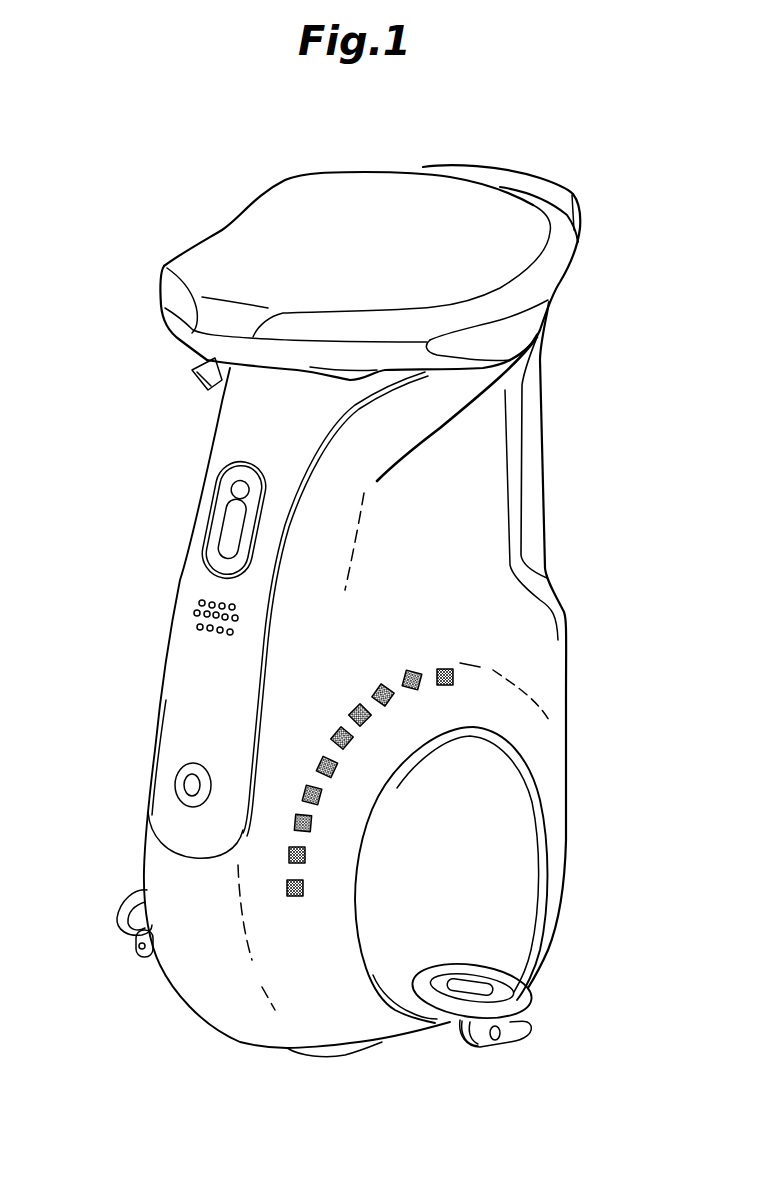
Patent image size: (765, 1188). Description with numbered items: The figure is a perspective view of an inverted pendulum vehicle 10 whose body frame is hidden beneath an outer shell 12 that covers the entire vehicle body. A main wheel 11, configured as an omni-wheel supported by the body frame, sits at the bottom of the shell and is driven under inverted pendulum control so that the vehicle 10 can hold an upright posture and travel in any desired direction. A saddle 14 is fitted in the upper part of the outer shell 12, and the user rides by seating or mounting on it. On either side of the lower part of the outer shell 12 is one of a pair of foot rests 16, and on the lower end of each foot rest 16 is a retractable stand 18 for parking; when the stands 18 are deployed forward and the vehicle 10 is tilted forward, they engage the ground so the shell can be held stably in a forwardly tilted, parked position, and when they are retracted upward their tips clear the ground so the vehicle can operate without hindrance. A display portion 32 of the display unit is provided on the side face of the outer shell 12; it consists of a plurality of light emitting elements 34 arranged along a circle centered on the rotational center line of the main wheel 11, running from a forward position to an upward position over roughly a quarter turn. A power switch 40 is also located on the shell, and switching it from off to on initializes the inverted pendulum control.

The inverted pendulum vehicle 10 is at (166, 478).
The main wheel 11 is at (343, 1057).
The outer shell 12 is at (537, 650).
The saddle 14 is at (375, 185).
The foot rest 16 is at (136, 895).
The retractable stand 18 is at (140, 953).
The display portion 32 is at (346, 703).
The light emitting element 34 is at (305, 790).
The power switch 40 is at (178, 787).